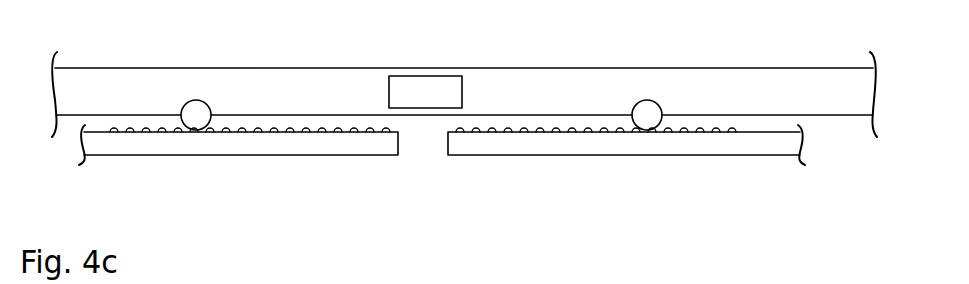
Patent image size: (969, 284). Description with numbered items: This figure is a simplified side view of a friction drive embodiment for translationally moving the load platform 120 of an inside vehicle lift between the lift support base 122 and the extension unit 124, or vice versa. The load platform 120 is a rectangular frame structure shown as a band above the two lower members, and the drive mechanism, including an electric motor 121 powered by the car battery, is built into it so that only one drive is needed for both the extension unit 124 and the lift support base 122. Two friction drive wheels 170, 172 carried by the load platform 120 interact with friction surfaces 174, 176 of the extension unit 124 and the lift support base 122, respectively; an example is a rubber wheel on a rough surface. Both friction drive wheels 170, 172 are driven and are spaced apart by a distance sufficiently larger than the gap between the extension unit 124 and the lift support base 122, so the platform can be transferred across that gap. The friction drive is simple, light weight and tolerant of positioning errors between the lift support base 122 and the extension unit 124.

The load platform 120 is at (378, 68).
The electric motor 121 is at (445, 76).
The lift support base 122 is at (128, 145).
The extension unit 124 is at (723, 155).
The friction drive wheel 170 is at (198, 100).
The friction drive wheel 172 is at (648, 100).
The friction surface 174 is at (602, 133).
The friction surface 176 is at (262, 133).